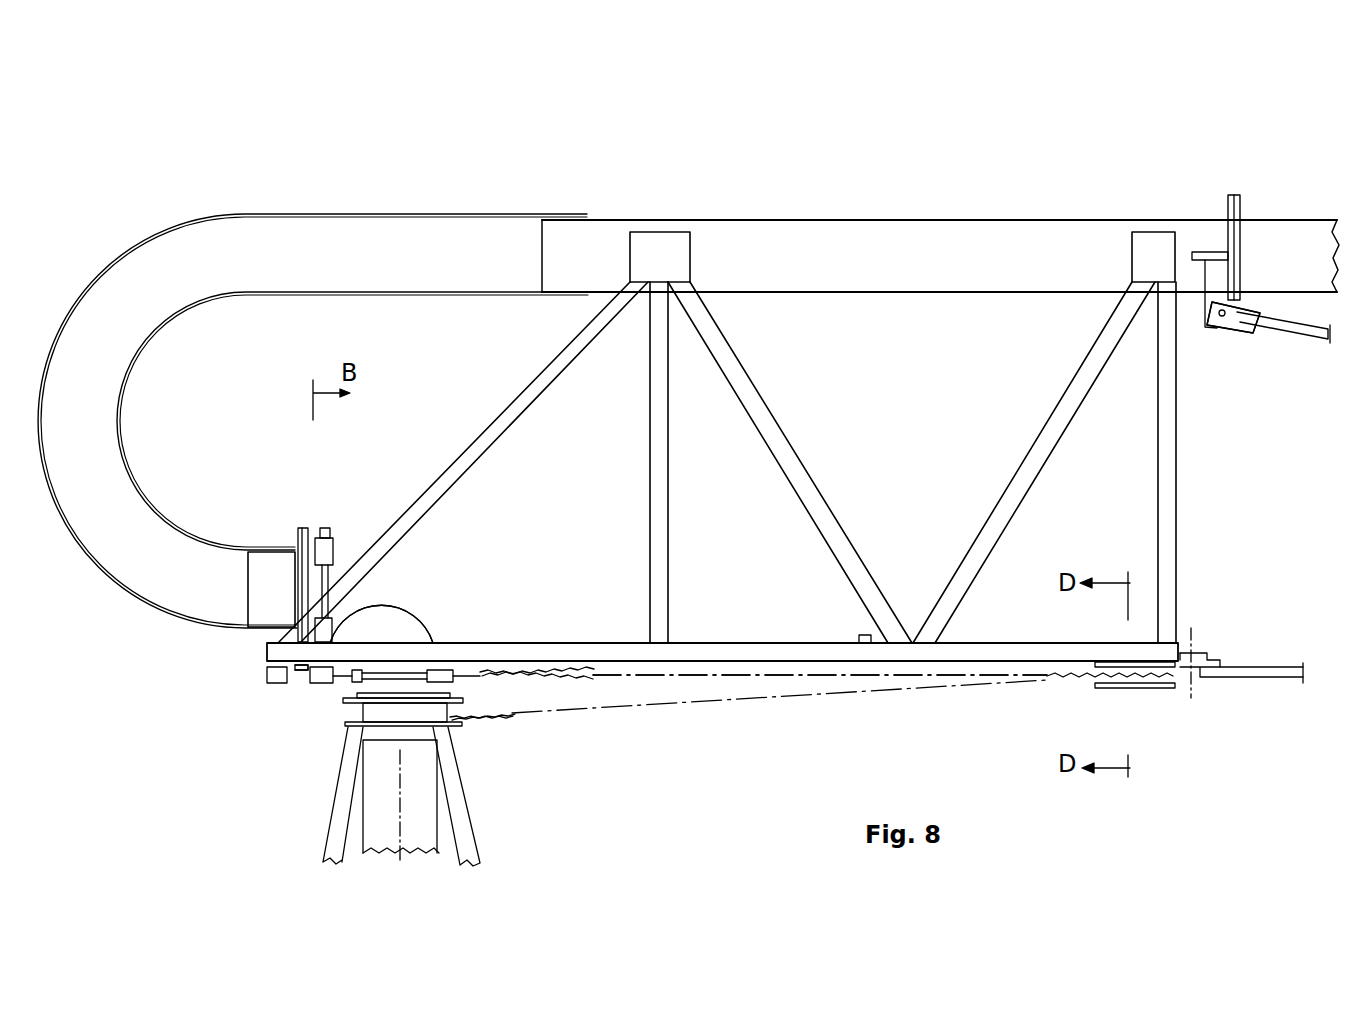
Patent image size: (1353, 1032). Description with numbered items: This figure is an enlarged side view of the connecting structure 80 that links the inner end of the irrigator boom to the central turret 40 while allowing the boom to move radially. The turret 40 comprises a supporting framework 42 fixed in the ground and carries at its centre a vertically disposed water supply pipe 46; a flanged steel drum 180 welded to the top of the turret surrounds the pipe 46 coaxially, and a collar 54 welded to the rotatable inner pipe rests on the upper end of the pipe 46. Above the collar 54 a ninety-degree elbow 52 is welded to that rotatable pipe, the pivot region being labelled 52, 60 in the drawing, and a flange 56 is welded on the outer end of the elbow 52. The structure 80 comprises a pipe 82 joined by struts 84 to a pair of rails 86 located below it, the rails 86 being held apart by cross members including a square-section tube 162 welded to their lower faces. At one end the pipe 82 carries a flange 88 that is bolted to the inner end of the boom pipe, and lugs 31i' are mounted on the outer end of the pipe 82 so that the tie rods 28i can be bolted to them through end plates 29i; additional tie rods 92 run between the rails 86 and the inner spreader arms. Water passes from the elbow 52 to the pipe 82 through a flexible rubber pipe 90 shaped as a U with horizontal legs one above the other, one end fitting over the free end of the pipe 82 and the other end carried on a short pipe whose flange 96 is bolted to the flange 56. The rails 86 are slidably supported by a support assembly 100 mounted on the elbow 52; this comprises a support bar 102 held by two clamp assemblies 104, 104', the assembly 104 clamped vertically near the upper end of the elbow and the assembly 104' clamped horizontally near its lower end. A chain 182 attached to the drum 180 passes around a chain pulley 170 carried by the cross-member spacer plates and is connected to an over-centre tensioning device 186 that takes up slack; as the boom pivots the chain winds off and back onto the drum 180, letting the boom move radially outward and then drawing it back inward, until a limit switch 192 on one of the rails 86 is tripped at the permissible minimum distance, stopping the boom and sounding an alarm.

The turret 40 is at (268, 729).
The supporting framework 42 is at (460, 818).
The water supply pipe 46 is at (370, 798).
The elbow 52 is at (424, 606).
The pivot bearing 60 is at (424, 606).
The collar 54 is at (455, 688).
The flange 56 is at (306, 526).
The structure 80 is at (704, 188).
The pipe 82 is at (805, 218).
The struts 84 is at (563, 367).
The rails 86 is at (742, 650).
The flange 88 is at (1227, 202).
The flexible rubber pipe 90 is at (130, 254).
The tie rods 92 is at (1255, 663).
The flange 96 is at (297, 527).
The support assembly 100 is at (307, 678).
The support bar 102 is at (318, 688).
The clamp assembly 104 is at (353, 553).
The clamp assembly 104' is at (430, 644).
The tube 162 is at (270, 672).
The chain pulley 170 is at (1113, 690).
The flanged steel drum 180 is at (460, 725).
The chain 182 is at (710, 675).
The tensioning device 186 is at (523, 668).
The limit switch 192 is at (866, 633).
The tie rods 28i is at (1298, 334).
The end plates 29i is at (1238, 335).
The lugs 31i' is at (1252, 359).